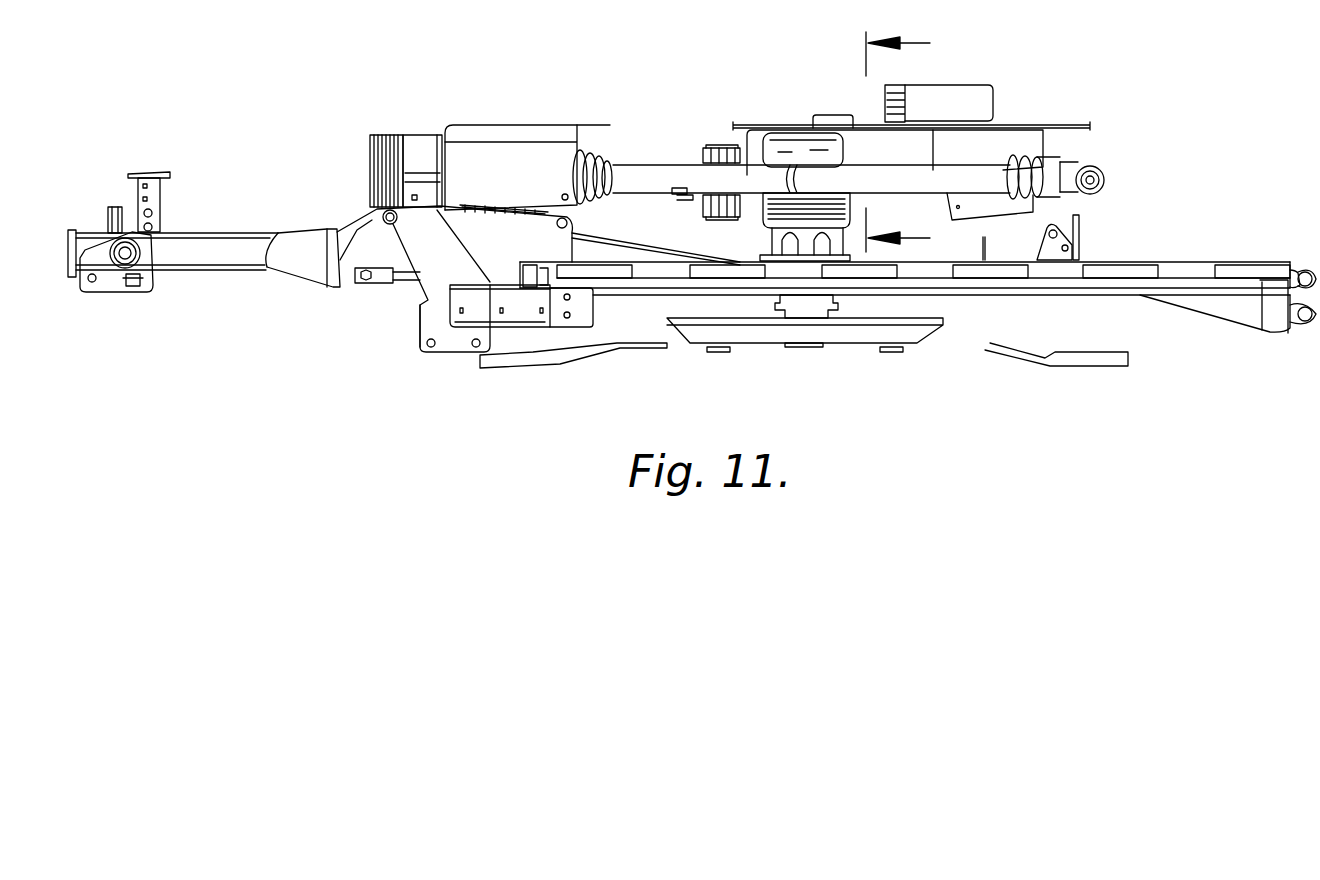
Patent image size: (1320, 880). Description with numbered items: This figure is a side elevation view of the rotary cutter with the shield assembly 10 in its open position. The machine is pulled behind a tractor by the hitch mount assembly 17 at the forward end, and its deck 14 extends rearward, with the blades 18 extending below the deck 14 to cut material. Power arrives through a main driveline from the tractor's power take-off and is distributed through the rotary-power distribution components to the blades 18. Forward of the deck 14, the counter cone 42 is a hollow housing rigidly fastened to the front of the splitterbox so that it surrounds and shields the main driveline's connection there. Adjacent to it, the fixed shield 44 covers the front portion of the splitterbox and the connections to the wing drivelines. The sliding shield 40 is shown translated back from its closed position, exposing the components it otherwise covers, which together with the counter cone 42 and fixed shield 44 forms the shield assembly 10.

The shield assembly 10 is at (666, 115).
The deck 14 is at (1192, 263).
The hitch mount assembly 17 is at (222, 260).
The blades 18 is at (840, 332).
The sliding shield 40 is at (1060, 121).
The counter cone 42 is at (416, 142).
The fixed shield 44 is at (503, 133).